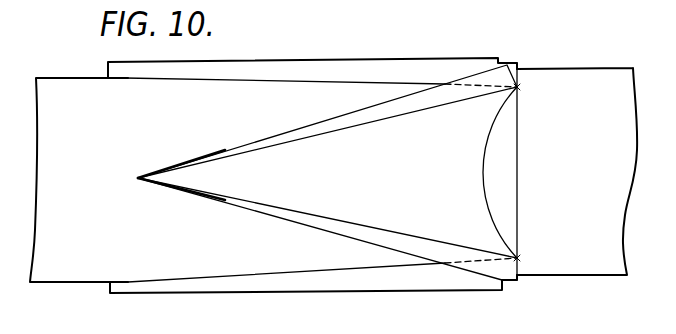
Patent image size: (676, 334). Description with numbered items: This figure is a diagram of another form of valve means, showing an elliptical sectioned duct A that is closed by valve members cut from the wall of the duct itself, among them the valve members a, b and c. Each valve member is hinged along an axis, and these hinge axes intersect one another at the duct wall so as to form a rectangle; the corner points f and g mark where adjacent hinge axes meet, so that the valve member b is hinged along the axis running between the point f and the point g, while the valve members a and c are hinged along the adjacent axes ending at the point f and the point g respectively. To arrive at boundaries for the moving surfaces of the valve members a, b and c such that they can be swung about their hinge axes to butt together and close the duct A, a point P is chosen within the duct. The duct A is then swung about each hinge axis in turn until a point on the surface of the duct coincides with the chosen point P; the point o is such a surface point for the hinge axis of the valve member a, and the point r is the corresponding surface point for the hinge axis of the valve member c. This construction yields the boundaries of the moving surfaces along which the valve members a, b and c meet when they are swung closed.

The elliptical sectioned duct A is at (92, 78).
The point on the duct surface o is at (125, 78).
The point on the duct surface r is at (128, 282).
The chosen point P is at (128, 206).
The valve member a is at (305, 132).
The valve member c is at (350, 230).
The valve member b is at (446, 184).
The hinge axis intersection point f is at (517, 88).
The hinge axis intersection point g is at (545, 272).